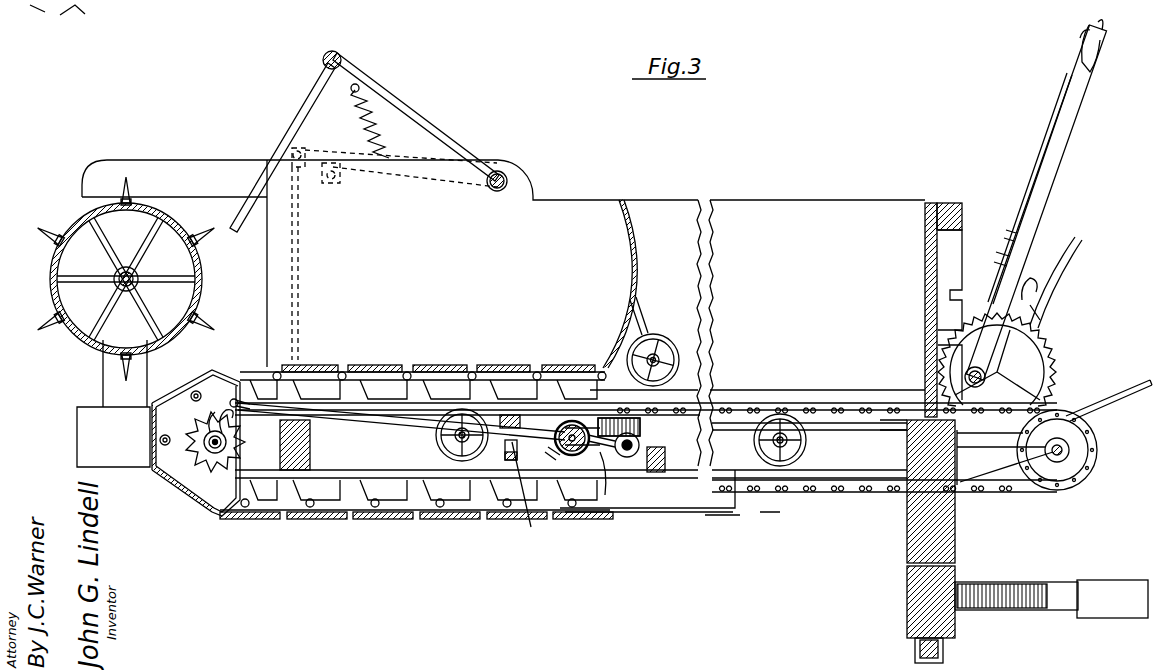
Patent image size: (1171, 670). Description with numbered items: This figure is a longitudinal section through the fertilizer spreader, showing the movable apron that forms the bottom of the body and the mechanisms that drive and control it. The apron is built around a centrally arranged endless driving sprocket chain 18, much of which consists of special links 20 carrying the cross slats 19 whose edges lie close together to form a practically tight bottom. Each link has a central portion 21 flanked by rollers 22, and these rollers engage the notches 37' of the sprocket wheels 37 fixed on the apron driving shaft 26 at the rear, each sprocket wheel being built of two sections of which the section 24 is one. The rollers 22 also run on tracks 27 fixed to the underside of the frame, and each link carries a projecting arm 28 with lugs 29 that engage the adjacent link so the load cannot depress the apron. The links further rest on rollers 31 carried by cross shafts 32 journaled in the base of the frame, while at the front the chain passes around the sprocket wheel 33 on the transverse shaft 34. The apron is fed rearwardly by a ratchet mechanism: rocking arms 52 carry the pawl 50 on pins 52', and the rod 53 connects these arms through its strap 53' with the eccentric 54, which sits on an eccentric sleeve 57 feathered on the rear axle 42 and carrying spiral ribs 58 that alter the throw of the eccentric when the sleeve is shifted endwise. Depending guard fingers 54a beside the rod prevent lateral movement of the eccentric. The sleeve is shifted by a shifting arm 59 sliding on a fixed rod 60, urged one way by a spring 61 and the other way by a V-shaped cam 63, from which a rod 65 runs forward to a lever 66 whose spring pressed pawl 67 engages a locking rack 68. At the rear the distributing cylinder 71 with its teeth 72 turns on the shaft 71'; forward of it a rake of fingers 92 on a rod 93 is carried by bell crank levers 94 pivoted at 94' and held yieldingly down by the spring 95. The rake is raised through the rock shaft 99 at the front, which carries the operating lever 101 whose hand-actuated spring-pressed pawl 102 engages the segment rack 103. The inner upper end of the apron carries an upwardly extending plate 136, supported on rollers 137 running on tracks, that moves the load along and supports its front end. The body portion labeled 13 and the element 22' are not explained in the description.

The hopper body 13 is at (817, 295).
The endless driving sprocket chain 18 is at (200, 450).
The cross slats 19 is at (552, 368).
The special links 20 is at (432, 497).
The central portion 21 is at (300, 492).
The rollers 22 is at (423, 361).
The head frame edge 22' is at (184, 438).
The sprocket wheel section 24 is at (208, 498).
The apron driving shaft 26 is at (230, 450).
The tracks 27 is at (660, 513).
The projecting arm 28 is at (338, 416).
The lugs 29 is at (340, 368).
The rollers 31 is at (436, 436).
The cross shafts 32 is at (472, 444).
The sprocket wheel 33 is at (1100, 448).
The transversely disposed shaft 34 is at (1068, 460).
The sprocket wheels 37 is at (181, 464).
The notches 37' is at (229, 445).
The axle 42 is at (580, 452).
The pawl 50 is at (230, 399).
The rocking arms 52 is at (238, 421).
The pins 52' is at (184, 404).
The eccentric rod 53 is at (401, 424).
The strap 53' is at (613, 478).
The eccentric 54 is at (556, 452).
The guard fingers 54a is at (531, 524).
The eccentric sleeve 57 is at (610, 425).
The spiral ribs 58 is at (580, 425).
The shifting arm 59 is at (552, 428).
The fixed rod 60 is at (640, 442).
The spring 61 is at (666, 450).
The V-shaped cam 63 is at (608, 448).
The rod 65 is at (856, 432).
The lever 66 is at (1056, 290).
The spring pressed pawl 67 is at (1040, 325).
The locking rack 68 is at (1073, 390).
The cylinder portion 71 is at (145, 279).
The cylinder shaft 71' is at (146, 286).
The teeth 72 is at (170, 356).
The rake fingers 92 is at (292, 120).
The rod 93 is at (360, 125).
The levers 94 is at (416, 117).
The pivot 94' is at (514, 168).
The spring 95 is at (323, 52).
The rock shaft 99 is at (980, 385).
The operating lever 101 is at (1050, 200).
The spring-pressed pawl 102 is at (992, 268).
The segment rack 103 is at (1052, 350).
The upwardly extending plate 136 is at (632, 270).
The rollers 137 is at (658, 338).